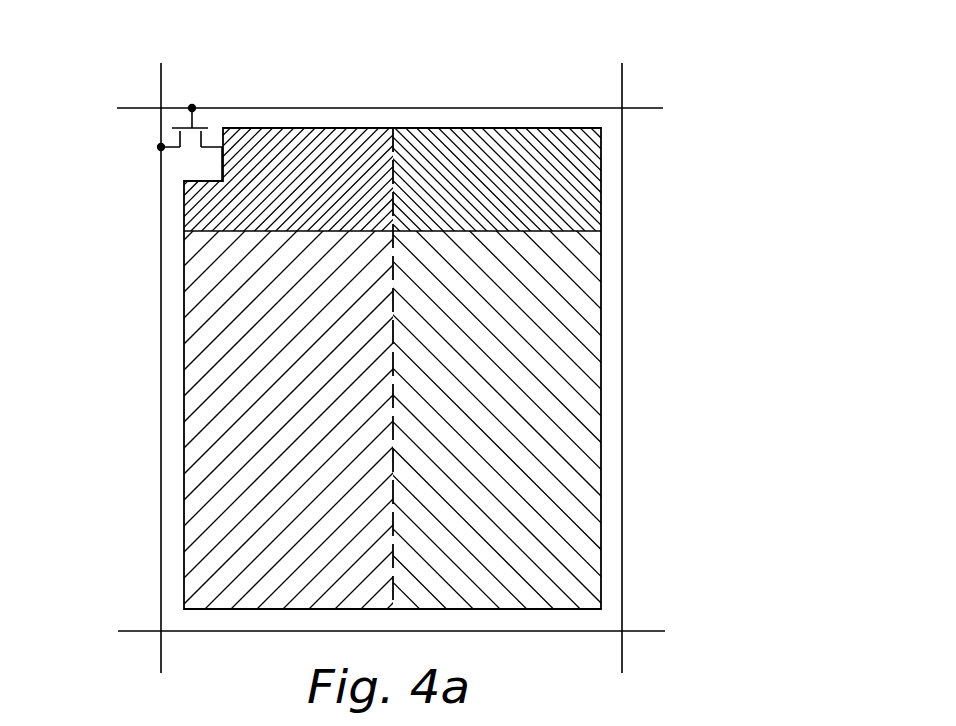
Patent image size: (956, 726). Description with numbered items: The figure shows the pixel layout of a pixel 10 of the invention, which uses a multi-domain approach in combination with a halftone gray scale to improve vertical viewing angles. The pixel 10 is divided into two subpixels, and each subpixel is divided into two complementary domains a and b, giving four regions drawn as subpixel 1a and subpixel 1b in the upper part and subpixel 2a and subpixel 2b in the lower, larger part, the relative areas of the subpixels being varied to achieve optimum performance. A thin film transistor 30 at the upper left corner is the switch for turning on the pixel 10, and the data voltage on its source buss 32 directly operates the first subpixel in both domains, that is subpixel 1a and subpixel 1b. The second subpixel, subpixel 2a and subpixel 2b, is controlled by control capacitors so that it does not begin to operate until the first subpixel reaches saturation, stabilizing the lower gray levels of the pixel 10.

The pixel 10 is at (392, 311).
The thin film transistor 30 is at (197, 128).
The source buss 32 is at (160, 178).
The subpixel 1a is at (190, 223).
The subpixel 1b is at (562, 350).
The subpixel 2a is at (203, 462).
The subpixel 2b is at (578, 428).